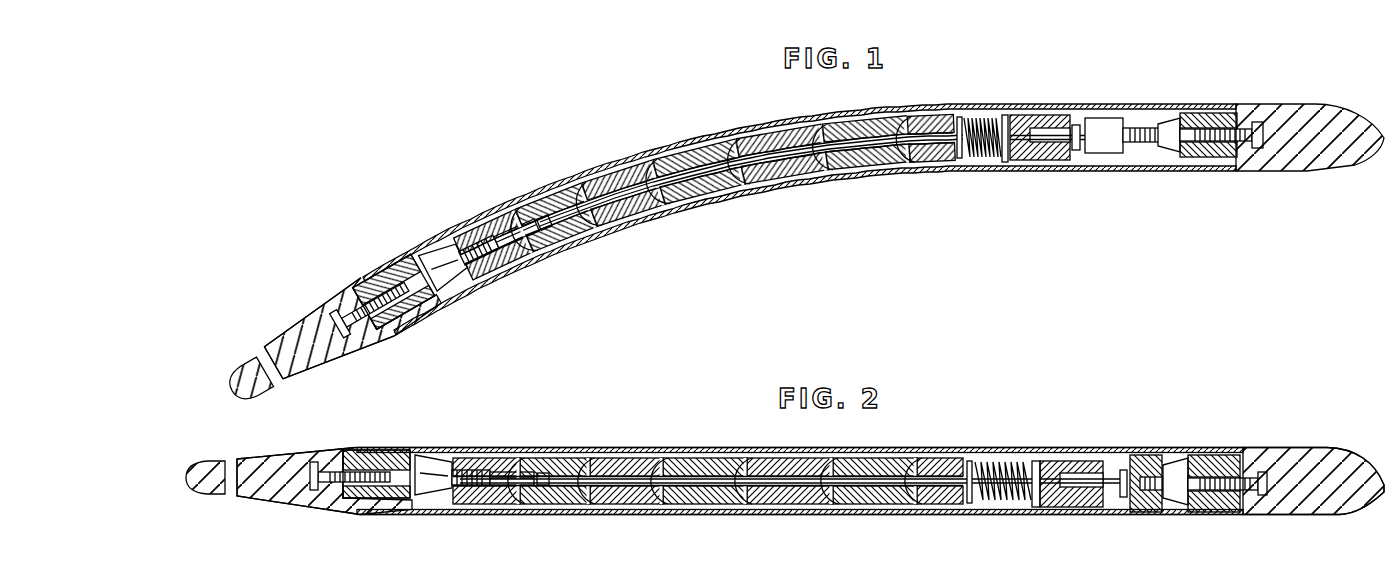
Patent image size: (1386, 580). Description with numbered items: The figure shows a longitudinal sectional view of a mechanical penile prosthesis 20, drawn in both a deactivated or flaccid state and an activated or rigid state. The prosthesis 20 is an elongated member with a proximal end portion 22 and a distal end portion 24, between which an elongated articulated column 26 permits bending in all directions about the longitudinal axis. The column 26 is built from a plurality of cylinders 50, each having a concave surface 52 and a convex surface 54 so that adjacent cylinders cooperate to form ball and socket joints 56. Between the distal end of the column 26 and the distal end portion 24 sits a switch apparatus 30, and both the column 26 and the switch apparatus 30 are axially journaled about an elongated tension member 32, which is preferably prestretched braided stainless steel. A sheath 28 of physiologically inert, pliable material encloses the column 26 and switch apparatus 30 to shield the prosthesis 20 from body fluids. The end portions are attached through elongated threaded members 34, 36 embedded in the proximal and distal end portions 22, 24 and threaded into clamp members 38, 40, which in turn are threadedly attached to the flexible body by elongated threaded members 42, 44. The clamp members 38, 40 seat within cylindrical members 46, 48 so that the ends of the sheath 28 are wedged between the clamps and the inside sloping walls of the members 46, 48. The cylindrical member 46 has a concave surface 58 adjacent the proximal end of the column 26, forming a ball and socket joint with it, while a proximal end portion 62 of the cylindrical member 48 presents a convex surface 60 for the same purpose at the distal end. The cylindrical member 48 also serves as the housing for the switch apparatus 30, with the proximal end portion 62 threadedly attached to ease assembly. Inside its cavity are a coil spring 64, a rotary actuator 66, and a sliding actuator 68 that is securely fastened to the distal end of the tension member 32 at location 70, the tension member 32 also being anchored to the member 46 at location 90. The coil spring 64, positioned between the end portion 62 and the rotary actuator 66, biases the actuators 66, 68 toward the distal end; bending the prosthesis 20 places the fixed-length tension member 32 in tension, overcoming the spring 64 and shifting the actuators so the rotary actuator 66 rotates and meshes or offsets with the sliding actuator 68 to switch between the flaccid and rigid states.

In FIG. 1, the penile prosthesis 20 is at (722, 209).
In FIG. 2, the penile prosthesis 20 is at (714, 515).
In FIG. 1, the proximal end portion 22 is at (282, 343).
In FIG. 2, the proximal end portion 22 is at (247, 460).
In FIG. 1, the distal end portion 24 is at (1323, 108).
In FIG. 2, the distal end portion 24 is at (1316, 455).
In FIG. 1, the articulated column 26 is at (697, 151).
In FIG. 2, the articulated column 26 is at (700, 460).
In FIG. 1, the sheath 28 is at (522, 203).
In FIG. 2, the sheath 28 is at (530, 450).
In FIG. 1, the switch apparatus 30 is at (997, 157).
In FIG. 2, the switch apparatus 30 is at (1001, 512).
In FIG. 1, the tension member 32 is at (610, 234).
In FIG. 2, the tension member 32 is at (610, 492).
In FIG. 1, the threaded member 34 is at (345, 313).
In FIG. 2, the threaded member 34 is at (330, 468).
In FIG. 1, the threaded member 36 is at (1244, 126).
In FIG. 2, the threaded member 36 is at (1260, 470).
In FIG. 1, the clamp member 38 is at (402, 280).
In FIG. 2, the clamp member 38 is at (384, 455).
In FIG. 1, the clamp member 40 is at (1197, 118).
In FIG. 2, the clamp member 40 is at (1205, 466).
In FIG. 1, the threaded member 42 is at (480, 243).
In FIG. 2, the threaded member 42 is at (470, 460).
In FIG. 1, the threaded member 44 is at (1150, 128).
In FIG. 2, the threaded member 44 is at (1170, 468).
In FIG. 1, the cylindrical member 46 is at (557, 197).
In FIG. 2, the cylindrical member 46 is at (578, 462).
In FIG. 1, the cylindrical member 48 is at (1132, 116).
In FIG. 2, the cylindrical member 48 is at (1148, 460).
In FIG. 1, the cylinders 50 is at (640, 202).
In FIG. 2, the cylinders 50 is at (640, 502).
In FIG. 1, the concave surface 52 is at (820, 165).
In FIG. 1, the convex surface 54 is at (833, 169).
In FIG. 1, the ball and socket joints 56 is at (738, 153).
In FIG. 2, the ball and socket joints 56 is at (750, 465).
In FIG. 1, the concave surface 58 is at (593, 180).
In FIG. 1, the convex surface 60 is at (908, 137).
In FIG. 1, the proximal end portion 62 is at (945, 120).
In FIG. 2, the proximal end portion 62 is at (948, 462).
In FIG. 1, the coil spring 64 is at (963, 154).
In FIG. 2, the coil spring 64 is at (970, 506).
In FIG. 1, the rotary actuator 66 is at (1008, 155).
In FIG. 2, the rotary actuator 66 is at (1040, 508).
In FIG. 1, the sliding actuator 68 is at (1057, 145).
In FIG. 2, the sliding actuator 68 is at (1085, 508).
In FIG. 1, the location 70 is at (1087, 149).
In FIG. 2, the location 70 is at (1125, 500).
In FIG. 1, the location 90 is at (543, 220).
In FIG. 2, the location 90 is at (546, 473).